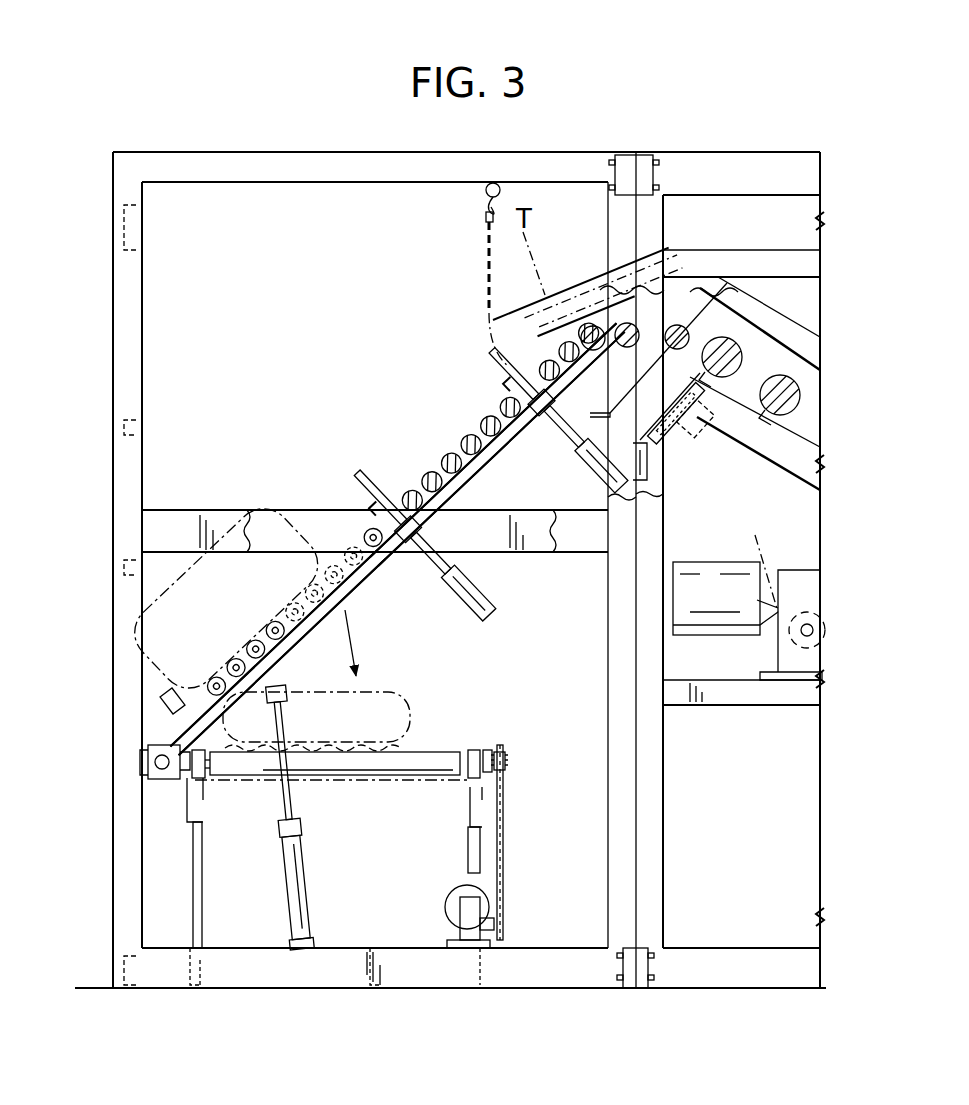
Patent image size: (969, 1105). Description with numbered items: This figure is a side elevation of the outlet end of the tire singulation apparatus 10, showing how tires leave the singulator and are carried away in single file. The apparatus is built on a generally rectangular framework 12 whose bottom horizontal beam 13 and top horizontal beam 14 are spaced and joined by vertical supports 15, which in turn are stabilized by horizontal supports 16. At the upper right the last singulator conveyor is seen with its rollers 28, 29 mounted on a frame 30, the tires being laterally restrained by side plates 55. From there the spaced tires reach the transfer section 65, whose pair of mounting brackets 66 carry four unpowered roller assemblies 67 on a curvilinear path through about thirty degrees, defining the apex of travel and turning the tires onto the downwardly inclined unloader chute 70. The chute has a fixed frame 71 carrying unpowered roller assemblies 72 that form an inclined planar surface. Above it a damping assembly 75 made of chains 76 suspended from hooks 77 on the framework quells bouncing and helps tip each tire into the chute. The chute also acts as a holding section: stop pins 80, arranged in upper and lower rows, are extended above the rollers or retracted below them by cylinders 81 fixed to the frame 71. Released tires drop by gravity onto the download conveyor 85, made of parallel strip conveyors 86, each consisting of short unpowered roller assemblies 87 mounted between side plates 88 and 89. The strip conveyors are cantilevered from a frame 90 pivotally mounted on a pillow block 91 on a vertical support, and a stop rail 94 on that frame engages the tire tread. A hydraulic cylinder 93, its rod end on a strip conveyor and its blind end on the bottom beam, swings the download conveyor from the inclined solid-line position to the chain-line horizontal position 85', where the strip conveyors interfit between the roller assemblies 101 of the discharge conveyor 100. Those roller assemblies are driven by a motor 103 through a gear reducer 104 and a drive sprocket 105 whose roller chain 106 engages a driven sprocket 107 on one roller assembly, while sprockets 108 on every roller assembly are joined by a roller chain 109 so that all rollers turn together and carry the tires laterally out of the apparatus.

The tire singulation apparatus 10 is at (683, 68).
The framework 12 is at (768, 153).
The bottom horizontal beam 13 is at (340, 990).
The top horizontal beam 14 is at (737, 165).
The vertical supports 15 is at (123, 457).
The horizontal supports 16 is at (172, 522).
The roller 28 is at (802, 394).
The roller 29 is at (772, 322).
The frame 30 is at (810, 472).
The side plates 55 is at (797, 337).
The transfer section 65 is at (672, 302).
The mounting brackets 66 is at (657, 407).
The roller assemblies 67 is at (565, 345).
The unloader chute 70 is at (430, 450).
The fixed frame 71 is at (475, 455).
The roller assemblies 72 is at (512, 395).
The damping assembly 75 is at (486, 247).
The chains 76 is at (486, 234).
The hooks 77 is at (487, 186).
The stop pins 80 is at (511, 372).
The cylinders 81 is at (597, 466).
The download conveyor 85 is at (226, 598).
The horizontal position of download conveyor 85' is at (375, 716).
The strip conveyors 86 is at (347, 595).
The roller assemblies 87 is at (330, 598).
The side plate 88 is at (330, 617).
The side plate 89 is at (280, 653).
The frame 90 is at (148, 755).
The pillow block 91 is at (152, 764).
The hydraulic cylinder 93 is at (297, 876).
The stop rail 94 is at (165, 703).
The discharge conveyor 100 is at (430, 748).
The roller assemblies 101 is at (353, 768).
The motor 103 is at (450, 895).
The gear reducer 104 is at (470, 907).
The drive sprocket 105 is at (497, 932).
The roller chain 106 is at (505, 836).
The driven sprocket 107 is at (500, 765).
The sprockets 108 is at (500, 752).
The roller chain 109 is at (473, 777).